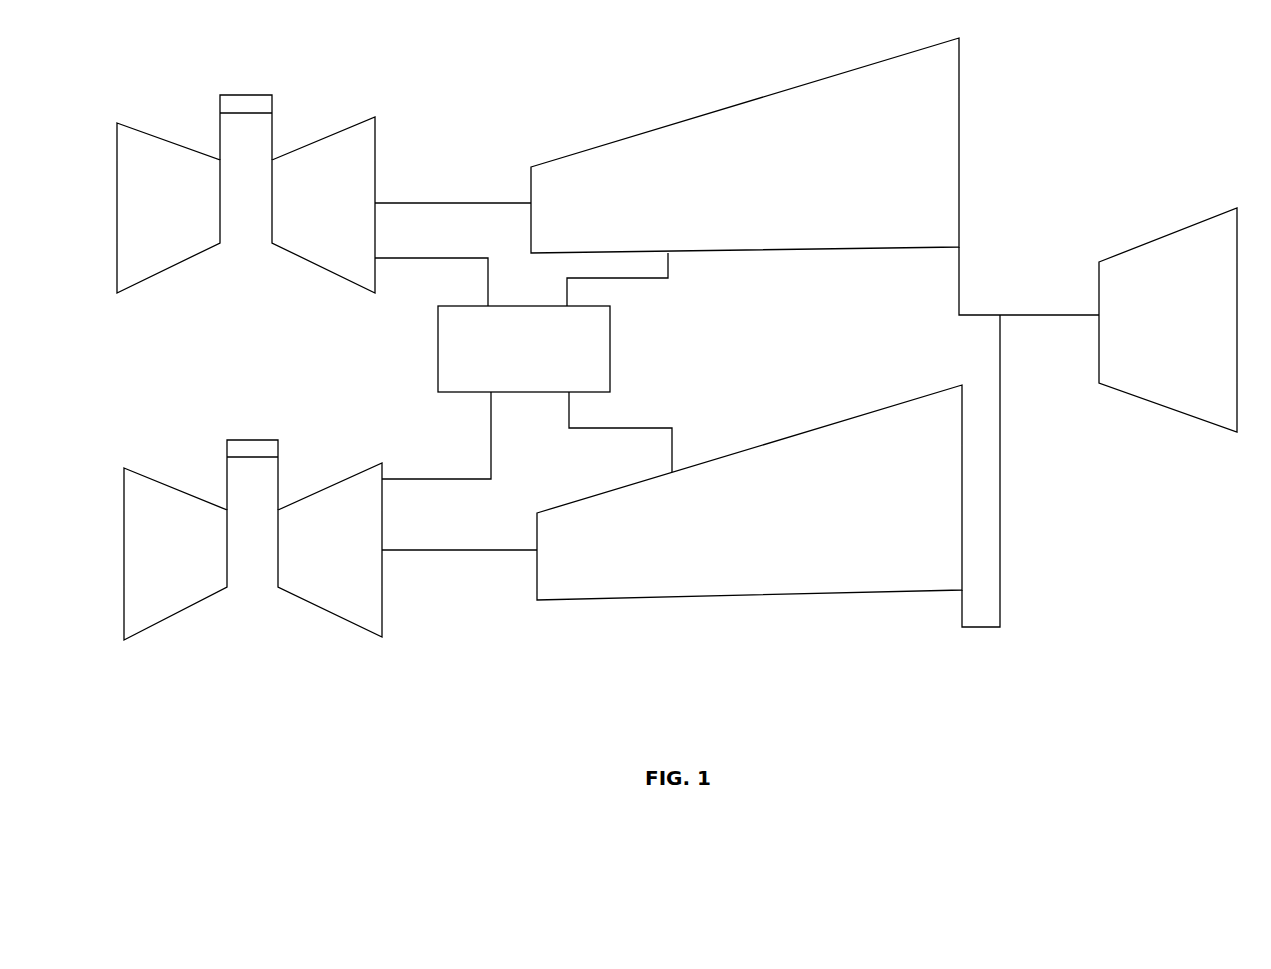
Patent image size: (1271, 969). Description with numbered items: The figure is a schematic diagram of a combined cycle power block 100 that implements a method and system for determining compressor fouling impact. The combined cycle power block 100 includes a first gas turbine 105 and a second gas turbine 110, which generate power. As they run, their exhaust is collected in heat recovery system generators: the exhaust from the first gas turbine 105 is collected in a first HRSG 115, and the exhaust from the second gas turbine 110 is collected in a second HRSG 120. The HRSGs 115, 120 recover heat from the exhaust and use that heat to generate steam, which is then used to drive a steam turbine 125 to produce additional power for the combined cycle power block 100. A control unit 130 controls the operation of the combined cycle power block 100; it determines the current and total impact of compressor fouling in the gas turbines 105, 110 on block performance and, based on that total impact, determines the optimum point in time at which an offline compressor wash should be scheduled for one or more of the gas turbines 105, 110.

The combined cycle power block 100 is at (1160, 582).
The first gas turbine 105 is at (195, 168).
The second gas turbine 110 is at (172, 582).
The first heat recovery system generator 115 is at (675, 148).
The second heat recovery system generator 120 is at (645, 563).
The steam turbine 125 is at (1152, 277).
The control unit 130 is at (447, 352).